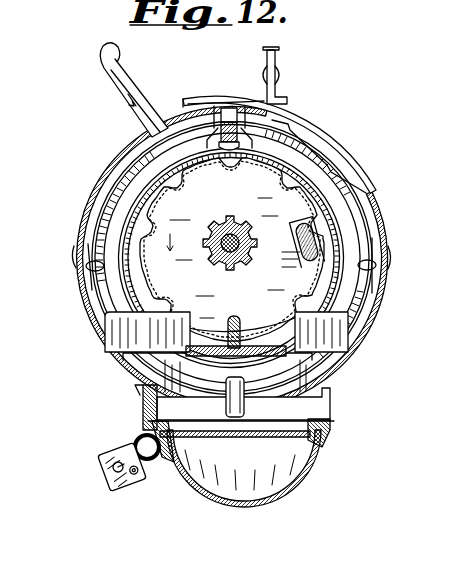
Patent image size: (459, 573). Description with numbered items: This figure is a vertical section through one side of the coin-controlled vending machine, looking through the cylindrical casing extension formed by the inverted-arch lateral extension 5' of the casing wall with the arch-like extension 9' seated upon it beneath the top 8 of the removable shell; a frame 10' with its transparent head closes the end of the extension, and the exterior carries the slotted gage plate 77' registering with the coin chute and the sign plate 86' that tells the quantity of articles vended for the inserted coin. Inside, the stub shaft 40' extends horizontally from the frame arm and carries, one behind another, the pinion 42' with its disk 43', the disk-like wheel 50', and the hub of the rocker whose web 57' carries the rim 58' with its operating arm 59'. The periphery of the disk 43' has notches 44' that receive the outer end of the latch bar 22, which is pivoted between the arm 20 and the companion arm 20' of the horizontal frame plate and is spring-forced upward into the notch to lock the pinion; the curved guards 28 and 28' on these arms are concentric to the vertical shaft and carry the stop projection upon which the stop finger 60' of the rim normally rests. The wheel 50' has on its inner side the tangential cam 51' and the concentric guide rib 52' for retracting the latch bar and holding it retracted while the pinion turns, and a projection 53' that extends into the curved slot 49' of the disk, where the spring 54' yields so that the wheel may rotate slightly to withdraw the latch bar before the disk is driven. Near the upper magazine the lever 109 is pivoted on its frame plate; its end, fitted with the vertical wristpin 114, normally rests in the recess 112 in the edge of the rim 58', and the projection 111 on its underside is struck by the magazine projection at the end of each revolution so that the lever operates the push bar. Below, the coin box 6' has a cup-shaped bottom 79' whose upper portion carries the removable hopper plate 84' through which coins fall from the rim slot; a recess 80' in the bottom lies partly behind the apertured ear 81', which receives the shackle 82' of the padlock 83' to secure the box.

The operating arm 59' is at (115, 90).
The slotted gage plate 77' is at (217, 86).
The top 8 is at (221, 106).
The vertical wristpin 114 is at (230, 108).
The sign plate 86' is at (289, 75).
The recess 112 is at (300, 116).
The casing extension 9' is at (231, 210).
The curved slot 49' is at (238, 257).
The web 57' is at (213, 256).
The guide rib 52' is at (211, 258).
The disk 43' is at (193, 256).
The spring 54' is at (268, 258).
The rim 58' is at (272, 258).
The disk-like wheel 50' is at (70, 280).
The cam 51' is at (86, 285).
The curved guard 28 is at (125, 332).
The curved guard 28' is at (344, 332).
The lever 109 is at (212, 142).
The projection 111 is at (246, 142).
The stub shaft 40' is at (222, 230).
The pinion 42' is at (233, 218).
The projection 53' is at (297, 254).
The lateral extension 5' is at (381, 284).
The stop finger 60' is at (382, 283).
The notch 44' is at (232, 249).
The latch bar 22 is at (255, 335).
The arm 20 is at (217, 350).
The companion arm 20' is at (291, 397).
The frame 10' is at (263, 390).
The coin box 6' is at (132, 407).
The shackle 82' is at (137, 431).
The apertured ear 81' is at (116, 461).
The padlock 83' is at (100, 479).
The recess 80' is at (157, 473).
The hopper plate 84' is at (241, 449).
The cup-shaped bottom 79' is at (244, 487).